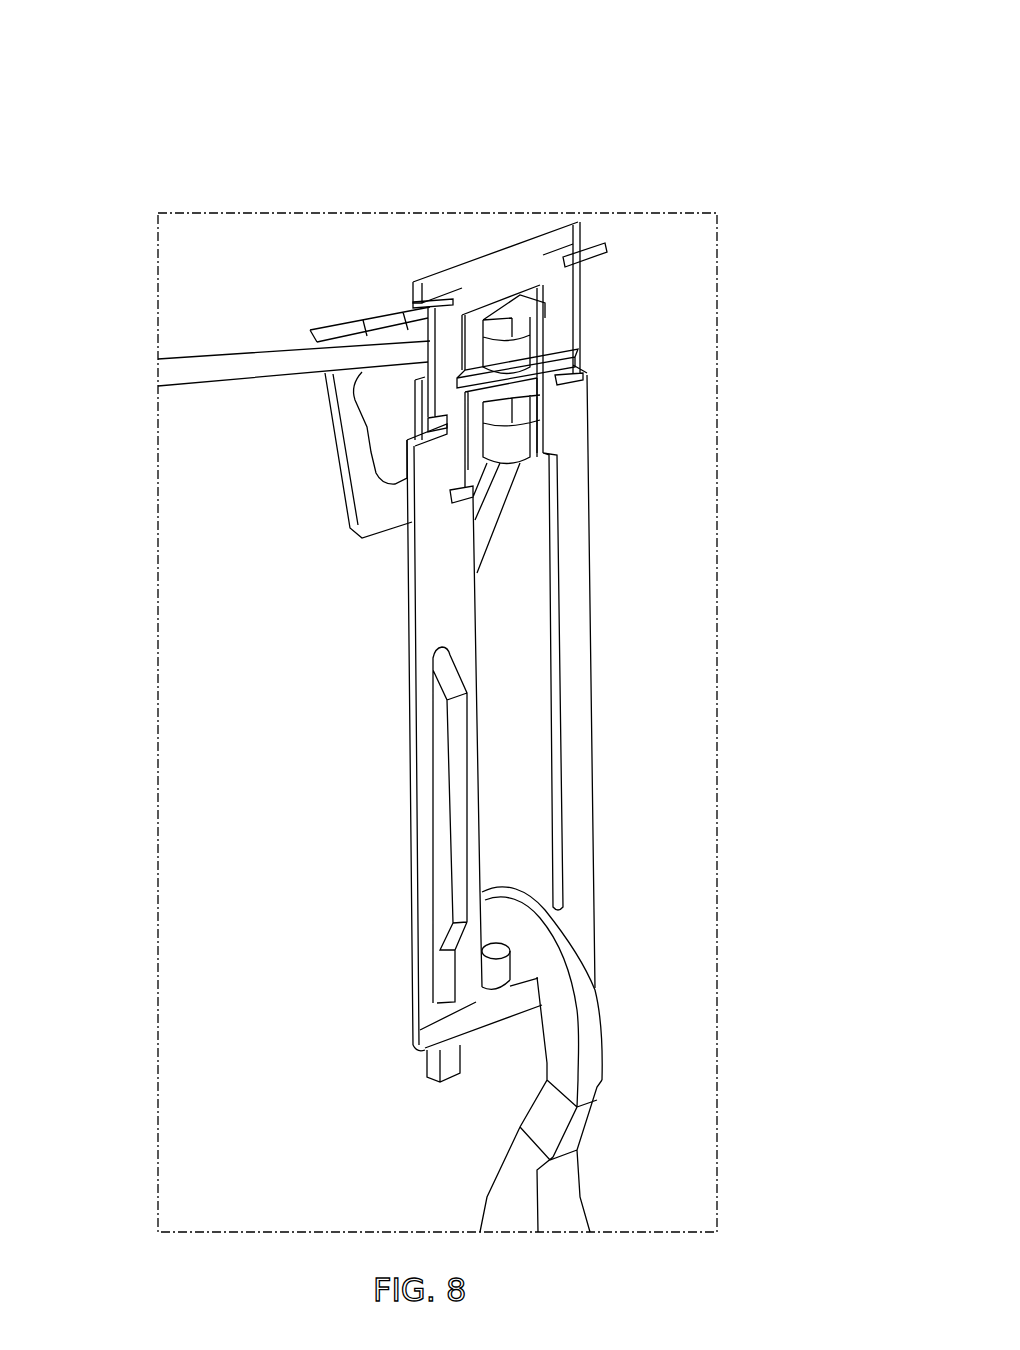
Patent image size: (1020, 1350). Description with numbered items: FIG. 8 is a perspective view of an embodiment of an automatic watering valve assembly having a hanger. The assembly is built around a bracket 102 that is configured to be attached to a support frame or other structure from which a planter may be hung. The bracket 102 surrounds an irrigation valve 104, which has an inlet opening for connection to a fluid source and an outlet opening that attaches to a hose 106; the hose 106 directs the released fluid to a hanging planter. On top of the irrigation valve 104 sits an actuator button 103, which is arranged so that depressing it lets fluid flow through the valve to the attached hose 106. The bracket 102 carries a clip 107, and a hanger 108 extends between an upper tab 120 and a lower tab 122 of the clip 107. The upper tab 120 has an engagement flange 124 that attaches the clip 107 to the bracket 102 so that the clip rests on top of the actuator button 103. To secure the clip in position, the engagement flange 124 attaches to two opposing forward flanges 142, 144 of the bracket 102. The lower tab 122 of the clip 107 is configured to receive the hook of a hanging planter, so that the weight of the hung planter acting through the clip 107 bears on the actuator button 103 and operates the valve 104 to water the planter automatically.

The bracket 102 is at (398, 310).
The actuator button 103 is at (520, 294).
The irrigation valve 104 is at (525, 358).
The hose 106 is at (497, 508).
The clip 107 is at (443, 618).
The hanger 108 is at (520, 682).
The upper tab 120 is at (568, 443).
The lower tab 122 is at (475, 1002).
The engagement flange 124 is at (497, 268).
The forward flange 142 is at (587, 243).
The forward flange 144 is at (403, 307).